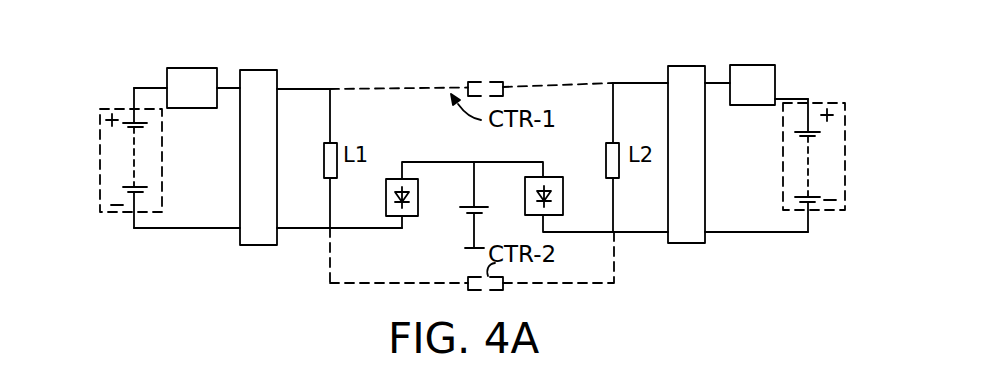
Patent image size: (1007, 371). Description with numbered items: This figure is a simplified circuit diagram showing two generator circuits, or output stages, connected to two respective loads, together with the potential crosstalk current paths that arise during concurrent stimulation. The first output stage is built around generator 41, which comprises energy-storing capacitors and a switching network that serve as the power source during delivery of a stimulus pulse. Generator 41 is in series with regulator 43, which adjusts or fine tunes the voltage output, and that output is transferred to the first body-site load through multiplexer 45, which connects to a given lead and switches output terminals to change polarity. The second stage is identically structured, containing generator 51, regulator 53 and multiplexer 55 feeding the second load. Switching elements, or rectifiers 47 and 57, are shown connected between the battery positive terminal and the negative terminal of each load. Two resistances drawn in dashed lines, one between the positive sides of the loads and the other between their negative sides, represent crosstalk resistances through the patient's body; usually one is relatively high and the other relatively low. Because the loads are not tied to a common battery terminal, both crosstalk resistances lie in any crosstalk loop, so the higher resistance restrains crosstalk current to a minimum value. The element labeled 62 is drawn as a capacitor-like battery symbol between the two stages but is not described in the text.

The generator 41 is at (100, 190).
The regulator 43 is at (177, 70).
The multiplexer 45 is at (270, 69).
The rectifier 47 is at (418, 197).
The generator 51 is at (845, 190).
The regulator 53 is at (745, 65).
The multiplexer 55 is at (682, 67).
The rectifier 57 is at (563, 197).
The capacitor 62 is at (463, 218).